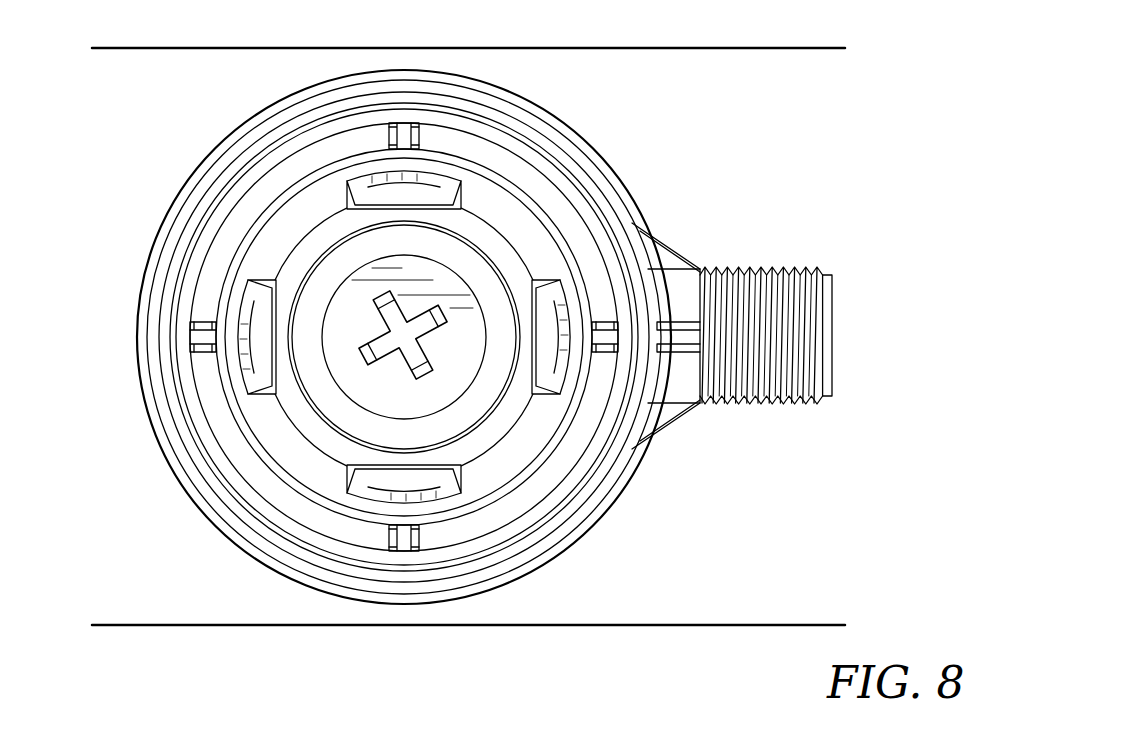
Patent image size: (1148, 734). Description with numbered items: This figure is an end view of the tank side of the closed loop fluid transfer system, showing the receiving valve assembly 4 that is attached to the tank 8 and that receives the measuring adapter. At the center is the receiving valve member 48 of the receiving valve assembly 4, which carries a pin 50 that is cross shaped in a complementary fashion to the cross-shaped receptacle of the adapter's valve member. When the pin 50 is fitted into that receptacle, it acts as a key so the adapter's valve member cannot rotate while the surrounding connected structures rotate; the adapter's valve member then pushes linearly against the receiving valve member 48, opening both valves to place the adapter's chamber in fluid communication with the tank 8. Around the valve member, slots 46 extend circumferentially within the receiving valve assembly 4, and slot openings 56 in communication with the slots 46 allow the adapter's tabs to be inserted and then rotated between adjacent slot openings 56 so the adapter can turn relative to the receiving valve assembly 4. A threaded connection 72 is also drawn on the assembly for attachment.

The tank 8 is at (753, 62).
The receiving valve assembly 4 is at (613, 152).
The threaded connector 72 is at (813, 262).
The slot openings 56 is at (425, 165).
The slots 46 is at (440, 177).
The receiving valve member 48 is at (485, 393).
The pin 50 is at (380, 352).